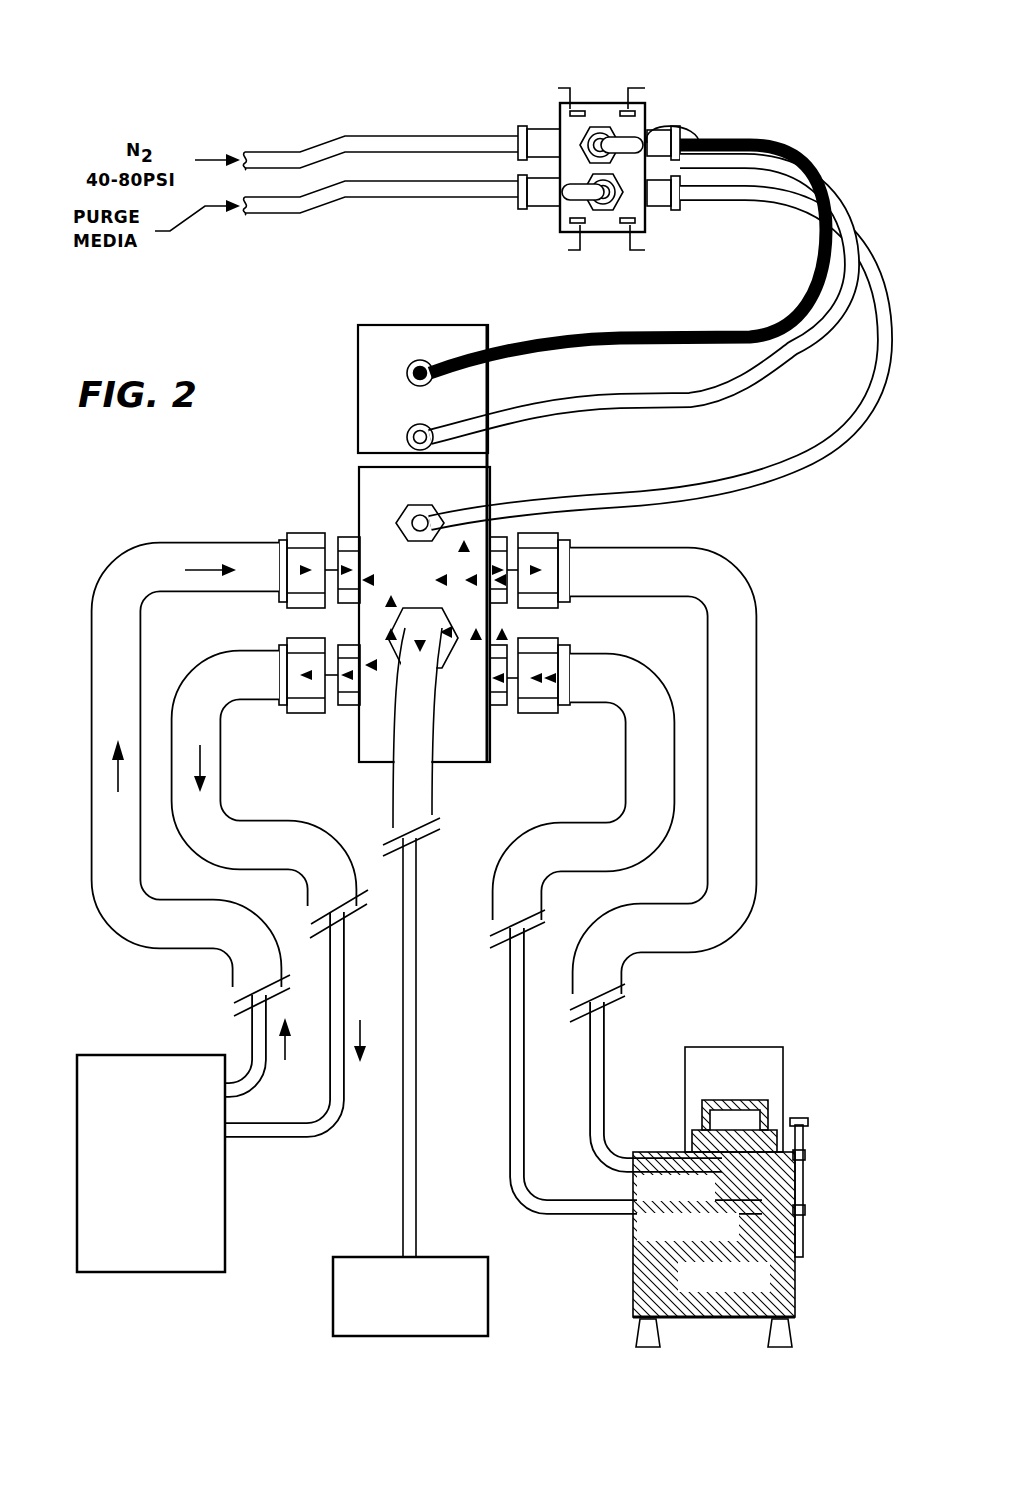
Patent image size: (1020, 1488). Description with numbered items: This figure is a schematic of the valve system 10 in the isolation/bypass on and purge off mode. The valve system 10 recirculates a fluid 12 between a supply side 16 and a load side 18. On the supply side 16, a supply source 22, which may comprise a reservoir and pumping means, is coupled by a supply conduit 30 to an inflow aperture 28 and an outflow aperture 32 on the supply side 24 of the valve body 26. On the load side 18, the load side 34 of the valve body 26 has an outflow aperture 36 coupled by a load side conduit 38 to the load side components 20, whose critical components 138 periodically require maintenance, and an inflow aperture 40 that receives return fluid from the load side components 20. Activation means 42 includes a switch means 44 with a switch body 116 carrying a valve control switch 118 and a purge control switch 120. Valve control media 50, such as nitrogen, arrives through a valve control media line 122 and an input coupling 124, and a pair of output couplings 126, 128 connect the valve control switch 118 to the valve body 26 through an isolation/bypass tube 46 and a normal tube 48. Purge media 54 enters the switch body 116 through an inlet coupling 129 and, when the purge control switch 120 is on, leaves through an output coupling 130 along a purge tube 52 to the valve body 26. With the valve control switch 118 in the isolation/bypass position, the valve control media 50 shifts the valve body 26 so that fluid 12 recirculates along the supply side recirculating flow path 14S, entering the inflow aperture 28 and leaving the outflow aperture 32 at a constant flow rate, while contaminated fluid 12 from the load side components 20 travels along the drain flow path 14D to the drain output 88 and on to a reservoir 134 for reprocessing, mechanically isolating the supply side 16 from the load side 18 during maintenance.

The valve system 10 is at (252, 405).
The fluid 12 is at (186, 541).
The supply side recirculating flow path 14S is at (212, 580).
The drain flow path 14D is at (597, 653).
The supply side 16 is at (68, 618).
The load side 18 is at (821, 635).
The load side components 20 is at (636, 1292).
The supply source 22 is at (226, 1192).
The supply side of valve body 24 is at (360, 749).
The valve body 26 is at (456, 772).
The inflow aperture 28 is at (332, 535).
The supply conduit 30 is at (101, 923).
The outflow aperture 32 is at (350, 701).
The load side of valve body 34 is at (493, 748).
The outflow aperture 36 is at (502, 593).
The load side conduit 38 is at (757, 752).
The inflow aperture 40 is at (497, 716).
The activation means 42 is at (620, 52).
The switch means 44 is at (600, 103).
The isolation/bypass tube 46 is at (613, 336).
The normal tube 48 is at (640, 400).
The valve control media 50 is at (306, 148).
The purge tube 52 is at (826, 453).
The purge media 54 is at (308, 213).
The drain output 88 is at (418, 1011).
The switch body 116 is at (586, 108).
The valve control switch 118 is at (630, 136).
The purge control switch 120 is at (578, 198).
The valve control media line 122 is at (345, 137).
The input coupling 124 is at (548, 140).
The output coupling 126 is at (685, 148).
The output coupling 128 is at (755, 146).
The inlet coupling 129 is at (535, 194).
The output coupling 130 is at (657, 203).
The reservoir 134 is at (462, 1257).
The critical components 138 is at (740, 1100).